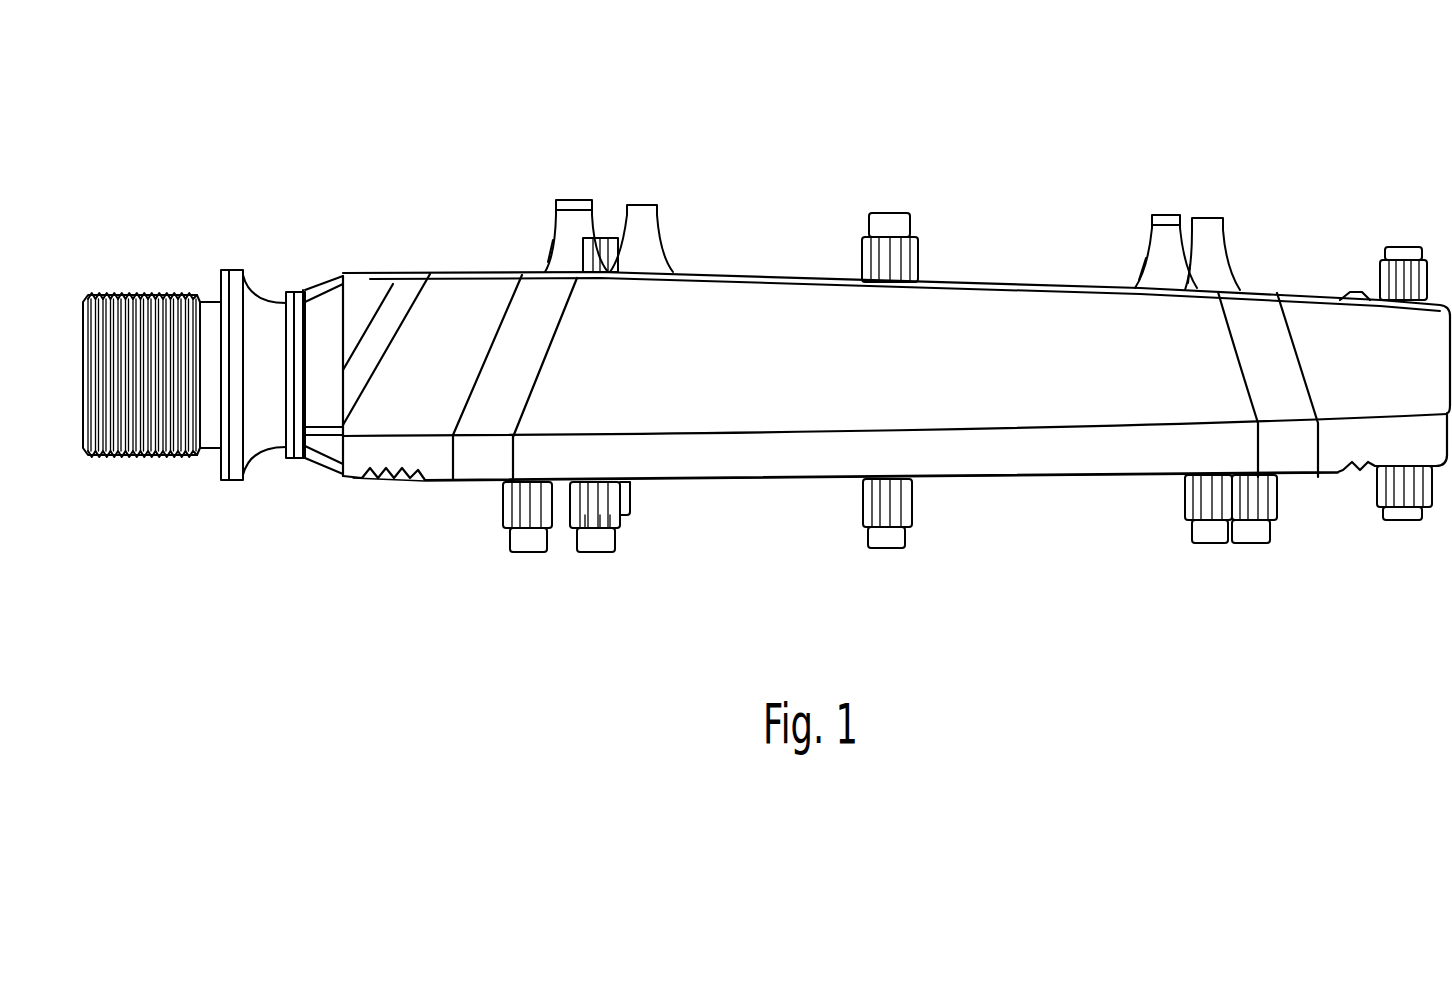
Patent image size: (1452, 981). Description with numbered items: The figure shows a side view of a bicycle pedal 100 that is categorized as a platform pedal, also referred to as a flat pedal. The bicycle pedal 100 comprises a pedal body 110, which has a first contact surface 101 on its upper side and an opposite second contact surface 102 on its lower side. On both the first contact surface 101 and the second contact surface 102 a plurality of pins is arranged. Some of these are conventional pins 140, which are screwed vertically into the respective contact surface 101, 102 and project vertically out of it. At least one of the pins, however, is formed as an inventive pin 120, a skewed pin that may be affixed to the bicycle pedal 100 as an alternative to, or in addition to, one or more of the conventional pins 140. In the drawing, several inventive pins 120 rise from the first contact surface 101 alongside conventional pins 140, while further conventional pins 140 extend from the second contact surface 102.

The bicycle pedal 100 is at (342, 181).
The first contact surface 101 is at (1046, 278).
The second contact surface 102 is at (1042, 503).
The pedal body 110 is at (735, 413).
The inventive pin 120 is at (577, 198).
The conventional pin 140 is at (890, 212).